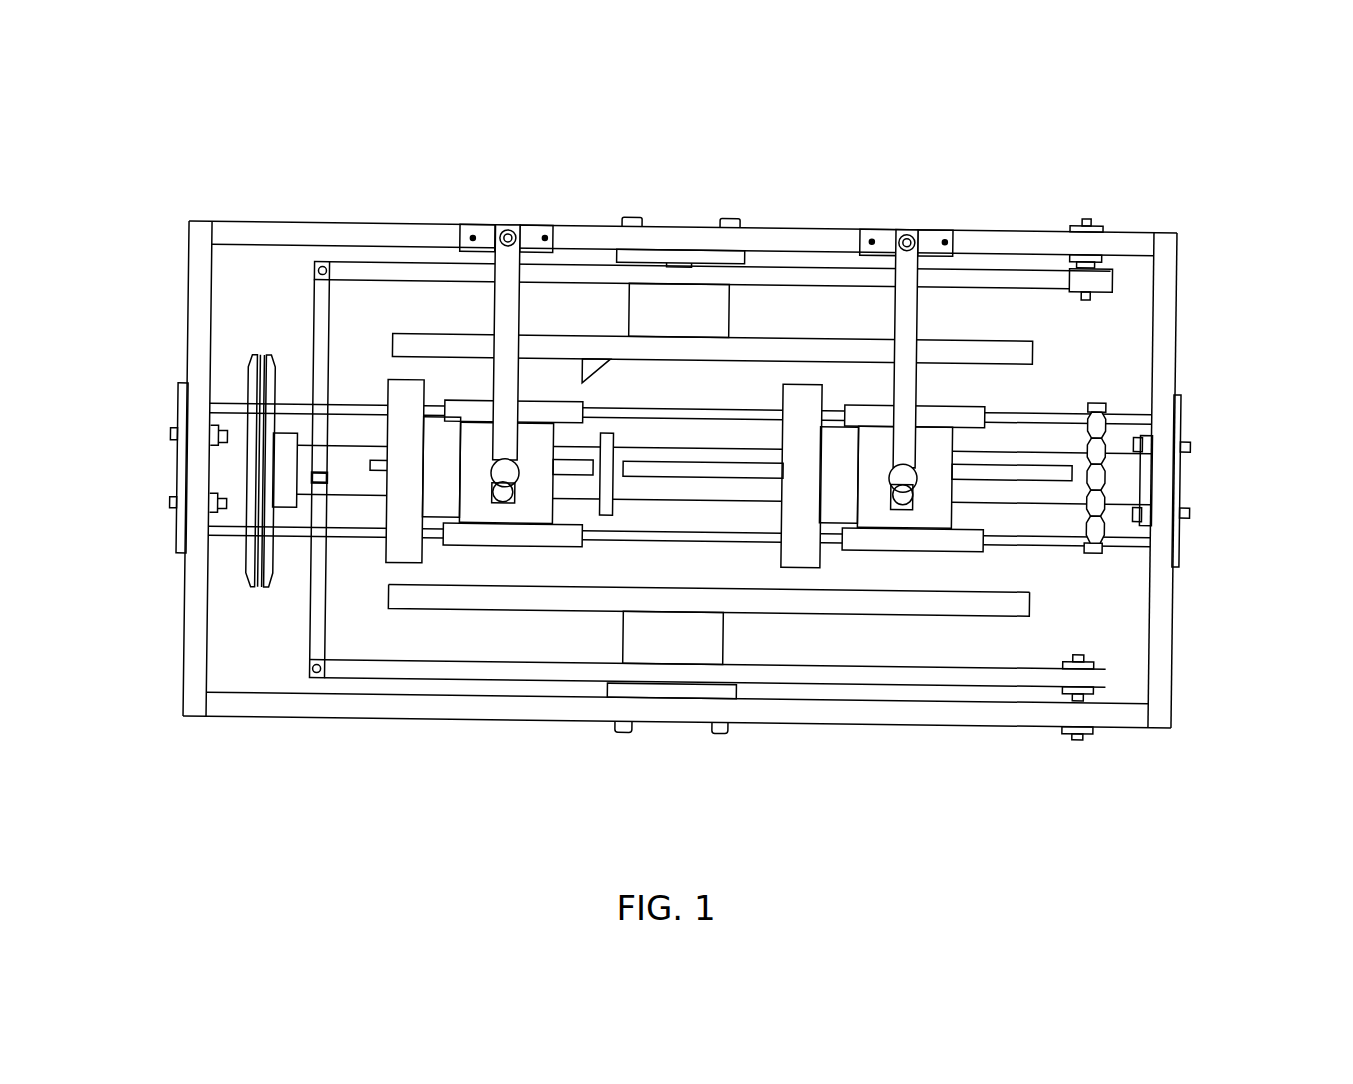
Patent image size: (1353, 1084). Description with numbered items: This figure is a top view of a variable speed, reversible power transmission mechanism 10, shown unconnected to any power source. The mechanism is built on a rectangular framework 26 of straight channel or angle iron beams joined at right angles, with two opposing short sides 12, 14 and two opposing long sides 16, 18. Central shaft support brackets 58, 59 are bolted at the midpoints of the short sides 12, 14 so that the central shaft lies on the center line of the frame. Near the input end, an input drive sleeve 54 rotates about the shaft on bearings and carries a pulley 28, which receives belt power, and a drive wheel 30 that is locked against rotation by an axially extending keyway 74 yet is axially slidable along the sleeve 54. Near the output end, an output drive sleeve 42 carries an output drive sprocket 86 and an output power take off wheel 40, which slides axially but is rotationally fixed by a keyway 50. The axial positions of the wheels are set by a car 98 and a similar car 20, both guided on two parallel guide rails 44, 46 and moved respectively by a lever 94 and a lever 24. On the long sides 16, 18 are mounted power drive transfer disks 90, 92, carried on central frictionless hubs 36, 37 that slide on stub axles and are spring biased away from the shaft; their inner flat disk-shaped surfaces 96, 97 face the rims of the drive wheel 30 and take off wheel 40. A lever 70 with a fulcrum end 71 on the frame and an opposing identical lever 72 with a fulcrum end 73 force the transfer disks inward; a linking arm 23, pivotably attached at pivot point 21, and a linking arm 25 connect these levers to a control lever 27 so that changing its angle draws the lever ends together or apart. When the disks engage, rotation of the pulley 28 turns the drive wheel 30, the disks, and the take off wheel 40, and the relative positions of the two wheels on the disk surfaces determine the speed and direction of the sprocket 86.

The variable speed, reversible power transmission mechanism 10 is at (622, 163).
The short side 12 is at (196, 581).
The short side 14 is at (1160, 659).
The long side 16 is at (491, 707).
The long side 18 is at (817, 241).
The car 20 is at (941, 417).
The pivot point 21 is at (313, 482).
The linking arm 23 is at (323, 332).
The lever 24 is at (898, 297).
The linking arm 25 is at (320, 635).
The rectangular framework 26 is at (1167, 259).
The control lever 27 is at (313, 482).
The pulley 28 is at (260, 485).
The drive wheel 30 is at (402, 398).
The central frictionless hub 36 is at (652, 637).
The central frictionless hub 37 is at (698, 303).
The output power take off wheel 40 is at (811, 550).
The output drive sleeve 42 is at (1117, 483).
The guide rail 44 is at (1134, 411).
The guide rail 46 is at (1131, 542).
The keyway 50 is at (998, 476).
The input drive sleeve 54 is at (355, 461).
The central shaft support bracket 58 is at (214, 443).
The central shaft support bracket 59 is at (1145, 509).
The lever 70 is at (349, 281).
The fulcrum end 71 is at (1061, 275).
The lever 72 is at (362, 671).
The fulcrum end 73 is at (1060, 670).
The keyway 74 is at (575, 476).
The output drive sprocket 86 is at (1103, 463).
The power drive transfer disk 90 is at (603, 601).
The power drive transfer disk 92 is at (728, 347).
The lever 94 is at (505, 320).
The inner flat disk-shaped surface 96 is at (708, 590).
The inner flat disk-shaped surface 97 is at (576, 384).
The car 98 is at (493, 539).